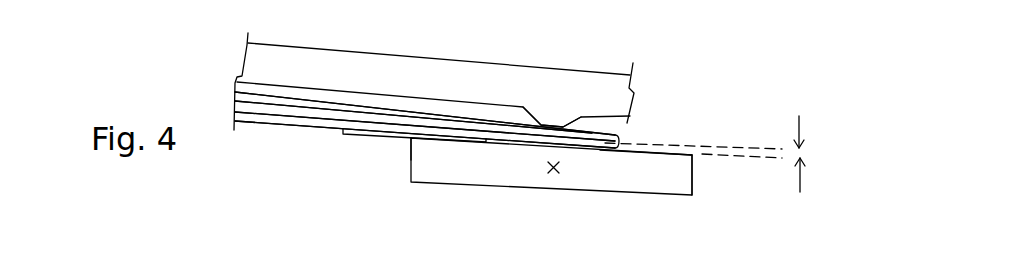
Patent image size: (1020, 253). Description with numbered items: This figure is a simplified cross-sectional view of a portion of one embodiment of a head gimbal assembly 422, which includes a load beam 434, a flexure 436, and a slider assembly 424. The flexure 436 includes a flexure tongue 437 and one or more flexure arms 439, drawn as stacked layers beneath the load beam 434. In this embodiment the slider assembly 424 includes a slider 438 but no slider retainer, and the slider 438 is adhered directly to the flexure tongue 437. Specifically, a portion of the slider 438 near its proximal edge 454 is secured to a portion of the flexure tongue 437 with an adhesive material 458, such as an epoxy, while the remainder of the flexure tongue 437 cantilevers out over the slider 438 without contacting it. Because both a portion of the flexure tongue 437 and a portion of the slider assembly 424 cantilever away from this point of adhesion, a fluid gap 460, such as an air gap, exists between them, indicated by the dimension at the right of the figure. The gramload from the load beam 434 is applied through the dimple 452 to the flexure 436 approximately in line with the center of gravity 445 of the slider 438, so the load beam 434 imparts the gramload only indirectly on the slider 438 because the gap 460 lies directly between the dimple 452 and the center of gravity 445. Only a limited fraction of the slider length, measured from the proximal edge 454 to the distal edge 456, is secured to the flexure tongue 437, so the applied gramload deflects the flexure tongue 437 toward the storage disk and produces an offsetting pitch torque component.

The head gimbal assembly 422 is at (360, 33).
The slider assembly 424 is at (608, 197).
The load beam 434 is at (438, 70).
The flexure 436 is at (237, 136).
The flexure tongue 437 is at (353, 130).
The slider 438 is at (665, 165).
The flexure arms 439 is at (330, 105).
The center of gravity 445 is at (560, 168).
The dimple 452 is at (547, 127).
The proximal edge 454 is at (411, 162).
The distal edge 456 is at (693, 174).
The adhesive material 458 is at (411, 138).
The fluid gap 460 is at (803, 141).